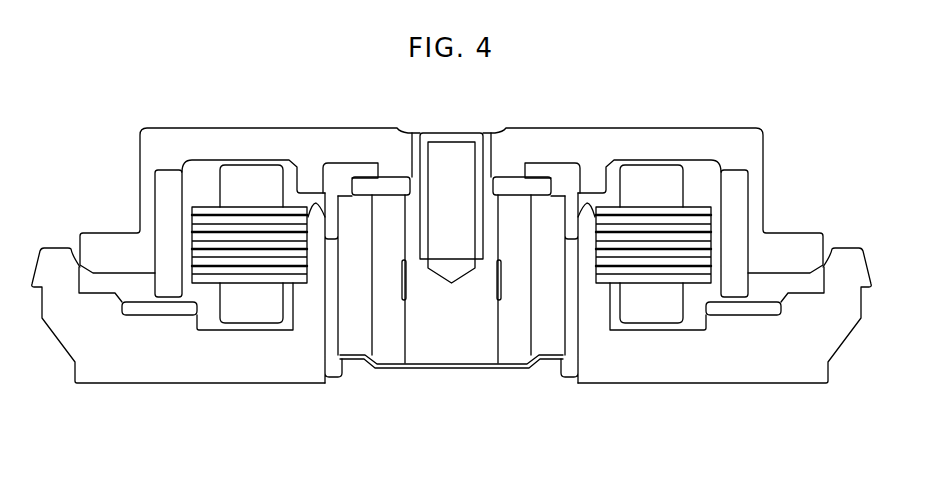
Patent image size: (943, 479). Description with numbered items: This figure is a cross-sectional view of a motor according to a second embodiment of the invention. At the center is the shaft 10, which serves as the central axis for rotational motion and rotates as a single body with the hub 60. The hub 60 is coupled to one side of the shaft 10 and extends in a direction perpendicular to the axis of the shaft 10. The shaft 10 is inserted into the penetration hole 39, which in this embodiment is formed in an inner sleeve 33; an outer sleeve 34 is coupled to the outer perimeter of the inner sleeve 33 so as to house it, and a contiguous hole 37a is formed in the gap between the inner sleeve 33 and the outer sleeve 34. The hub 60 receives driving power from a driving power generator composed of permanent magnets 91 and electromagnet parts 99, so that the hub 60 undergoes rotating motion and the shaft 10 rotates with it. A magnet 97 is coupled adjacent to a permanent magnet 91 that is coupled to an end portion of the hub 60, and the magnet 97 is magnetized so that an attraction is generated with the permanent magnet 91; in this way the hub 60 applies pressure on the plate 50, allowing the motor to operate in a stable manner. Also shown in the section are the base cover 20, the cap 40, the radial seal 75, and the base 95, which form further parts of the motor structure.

The shaft 10 is at (437, 350).
The base cover 20 is at (508, 366).
The inner sleeve 33 is at (380, 343).
The outer sleeve 34 is at (332, 338).
The contiguous hole 37a is at (533, 343).
The penetration hole 39 is at (392, 330).
The cap 40 is at (335, 170).
The plate 50 is at (393, 175).
The hub 60 is at (643, 135).
The radial seal 75 is at (528, 163).
The permanent magnets 91 is at (163, 168).
The base 95 is at (707, 372).
The magnets 97 is at (760, 312).
The electromagnet parts 99 is at (695, 215).